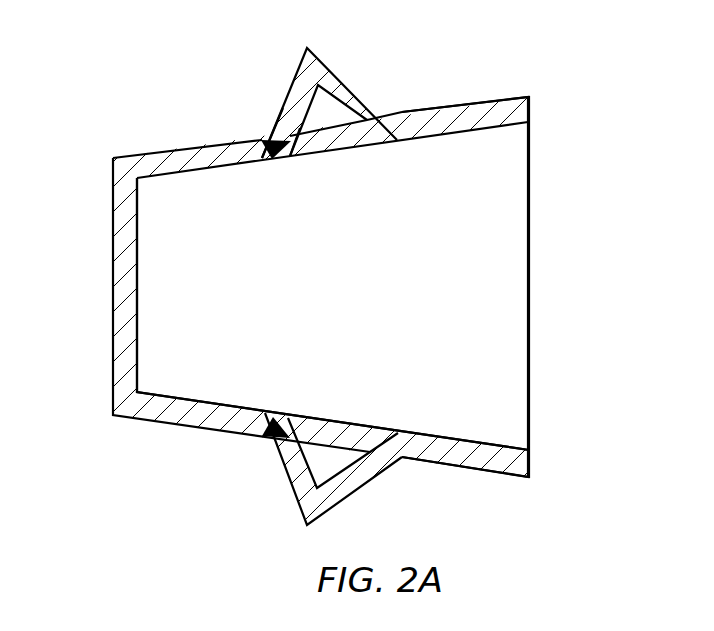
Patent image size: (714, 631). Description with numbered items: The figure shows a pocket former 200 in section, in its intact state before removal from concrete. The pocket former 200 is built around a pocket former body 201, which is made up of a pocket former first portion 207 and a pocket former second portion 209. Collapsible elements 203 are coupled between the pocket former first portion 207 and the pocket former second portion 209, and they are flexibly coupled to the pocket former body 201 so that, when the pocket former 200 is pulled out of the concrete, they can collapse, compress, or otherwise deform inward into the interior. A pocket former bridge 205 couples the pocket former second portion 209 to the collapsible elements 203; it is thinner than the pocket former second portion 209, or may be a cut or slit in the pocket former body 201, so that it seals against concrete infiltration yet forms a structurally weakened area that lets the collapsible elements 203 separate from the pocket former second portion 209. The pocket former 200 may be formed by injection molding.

The pocket former 200 is at (104, 99).
The pocket former body 201 is at (263, 140).
The collapsible elements 203 is at (364, 86).
The pocket former bridge 205 is at (266, 142).
The pocket former first portion 207 is at (530, 112).
The pocket former second portion 209 is at (178, 175).